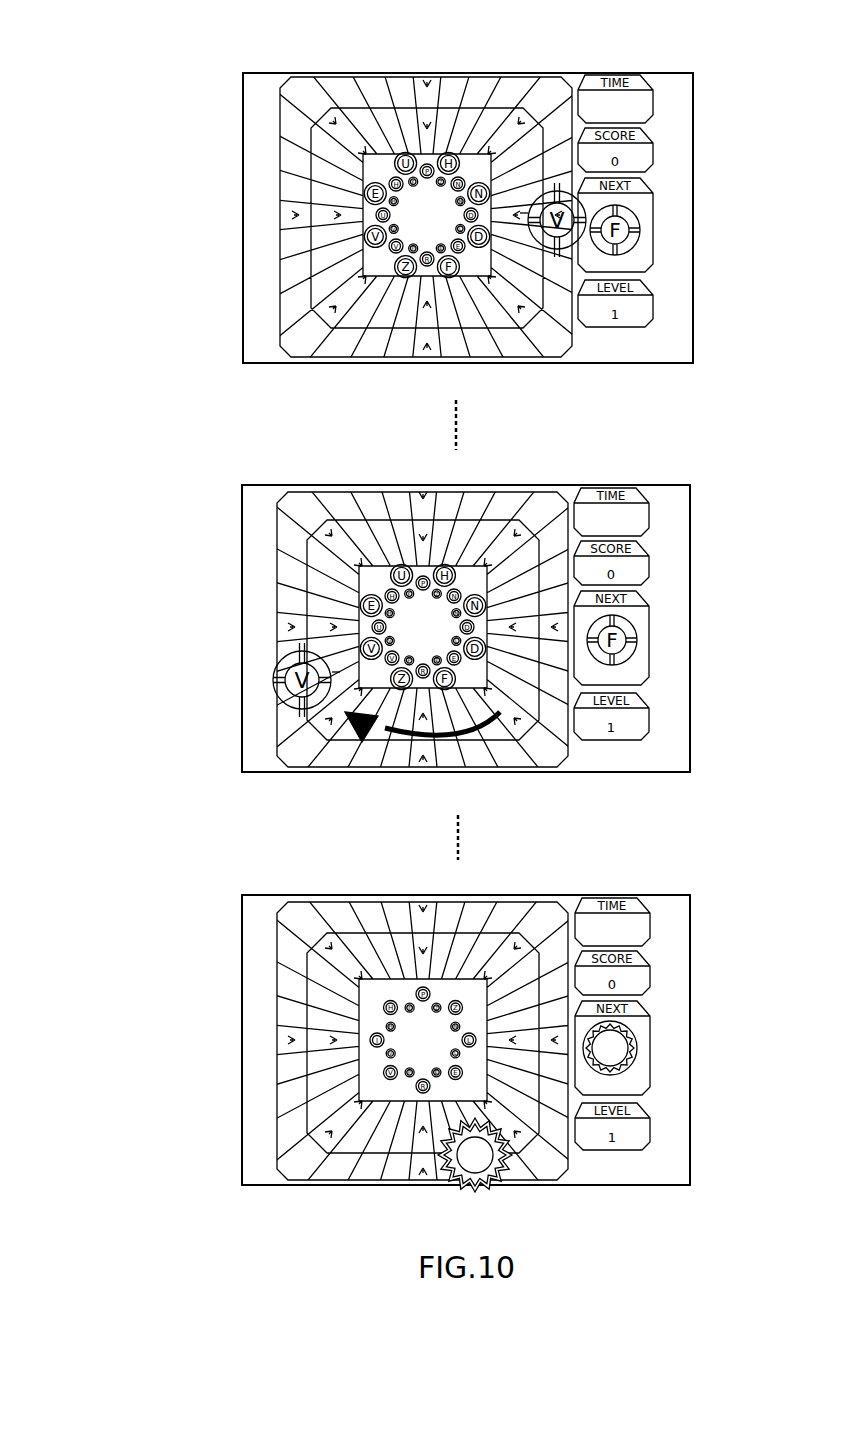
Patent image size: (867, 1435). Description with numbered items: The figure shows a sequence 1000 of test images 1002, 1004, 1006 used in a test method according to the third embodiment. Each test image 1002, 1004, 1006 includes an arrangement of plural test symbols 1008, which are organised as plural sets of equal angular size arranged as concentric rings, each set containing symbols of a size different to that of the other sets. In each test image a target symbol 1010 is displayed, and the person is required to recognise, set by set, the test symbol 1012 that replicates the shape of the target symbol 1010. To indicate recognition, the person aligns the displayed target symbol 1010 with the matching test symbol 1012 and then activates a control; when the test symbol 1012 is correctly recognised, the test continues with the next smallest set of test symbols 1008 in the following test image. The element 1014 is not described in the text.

The sequence 1000 is at (138, 88).
The test image 1002 is at (218, 230).
The test image 1004 is at (230, 652).
The test image 1006 is at (218, 1048).
The test symbols 1008 is at (347, 192).
The target symbol 1010 is at (570, 245).
The test symbol 1012 is at (362, 252).
The placed letter tile 1014 is at (440, 1150).